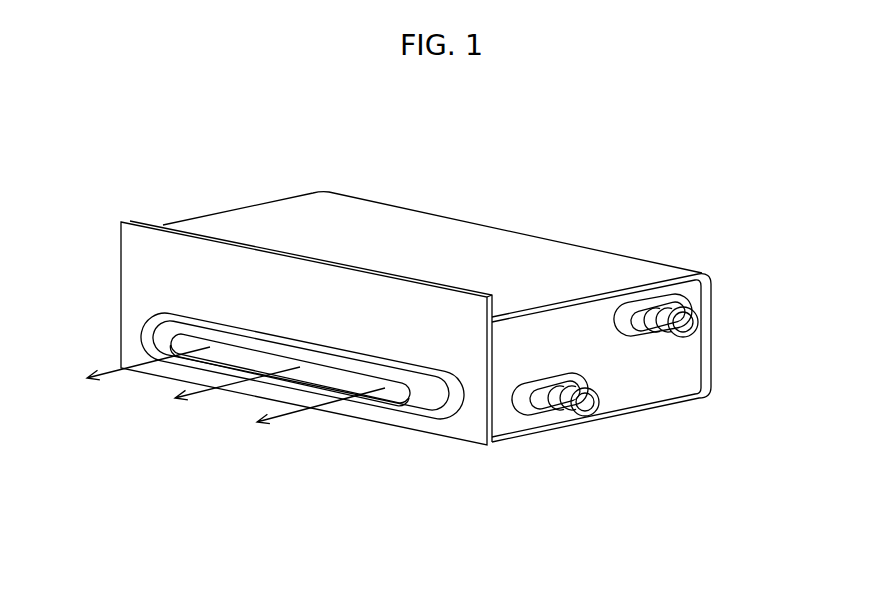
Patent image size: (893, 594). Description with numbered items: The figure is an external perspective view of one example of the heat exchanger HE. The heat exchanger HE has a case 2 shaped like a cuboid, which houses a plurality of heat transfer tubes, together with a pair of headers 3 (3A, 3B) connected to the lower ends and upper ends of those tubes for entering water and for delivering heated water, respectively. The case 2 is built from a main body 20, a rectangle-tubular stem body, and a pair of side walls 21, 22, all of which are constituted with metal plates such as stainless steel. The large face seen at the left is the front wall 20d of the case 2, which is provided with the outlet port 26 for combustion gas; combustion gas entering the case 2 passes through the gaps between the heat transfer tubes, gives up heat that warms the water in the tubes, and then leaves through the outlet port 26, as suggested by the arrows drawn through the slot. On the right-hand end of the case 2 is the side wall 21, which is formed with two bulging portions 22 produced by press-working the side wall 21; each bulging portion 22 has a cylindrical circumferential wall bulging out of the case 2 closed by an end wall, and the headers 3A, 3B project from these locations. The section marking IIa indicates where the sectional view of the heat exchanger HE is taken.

The heat exchanger HE is at (453, 181).
The case 2 is at (532, 230).
The main body 20 is at (580, 265).
The front wall 20d is at (450, 425).
The side wall 21 is at (627, 385).
The bulging portion 22 is at (633, 337).
The headers 3 is at (646, 365).
The header 3A is at (567, 412).
The header 3B is at (677, 298).
The outlet port 26 is at (327, 373).
The section line IIa is at (112, 205).